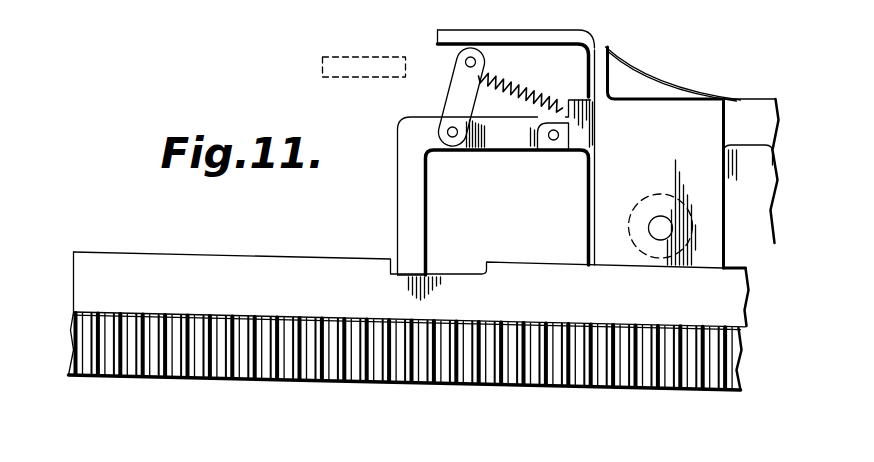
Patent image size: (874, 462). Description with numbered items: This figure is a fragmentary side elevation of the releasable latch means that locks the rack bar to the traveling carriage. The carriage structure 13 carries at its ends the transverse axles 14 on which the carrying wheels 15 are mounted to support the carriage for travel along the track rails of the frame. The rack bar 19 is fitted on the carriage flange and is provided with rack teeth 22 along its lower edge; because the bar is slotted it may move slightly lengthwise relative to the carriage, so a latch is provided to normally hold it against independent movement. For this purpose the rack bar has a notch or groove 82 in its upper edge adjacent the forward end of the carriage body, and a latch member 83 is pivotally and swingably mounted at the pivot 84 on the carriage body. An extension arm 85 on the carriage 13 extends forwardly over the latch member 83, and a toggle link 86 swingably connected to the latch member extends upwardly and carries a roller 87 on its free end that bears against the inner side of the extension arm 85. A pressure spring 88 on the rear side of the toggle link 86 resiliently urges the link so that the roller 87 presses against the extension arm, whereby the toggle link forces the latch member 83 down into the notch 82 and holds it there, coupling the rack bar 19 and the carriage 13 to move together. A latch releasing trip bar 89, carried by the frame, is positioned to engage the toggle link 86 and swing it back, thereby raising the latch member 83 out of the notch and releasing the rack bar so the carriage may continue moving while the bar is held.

The carriage structure 13 is at (690, 108).
The axle 14 is at (664, 216).
The carrying wheel 15 is at (641, 203).
The rack bar 19 is at (84, 290).
The rack teeth 22 is at (525, 382).
The notch or groove 82 is at (463, 274).
The latch member 83 is at (405, 193).
The pivot 84 is at (553, 141).
The extension arm 85 is at (515, 36).
The toggle link 86 is at (457, 93).
The roller 87 is at (456, 62).
The pressure spring 88 is at (517, 95).
The latch releasing trip bar 89 is at (322, 72).